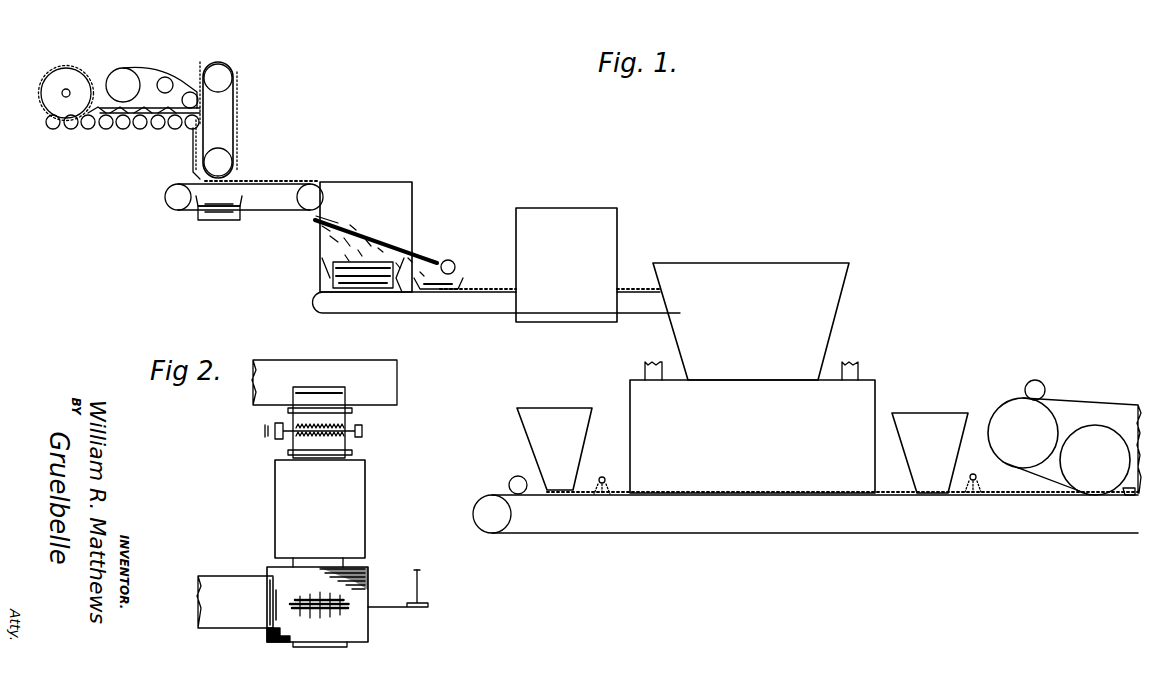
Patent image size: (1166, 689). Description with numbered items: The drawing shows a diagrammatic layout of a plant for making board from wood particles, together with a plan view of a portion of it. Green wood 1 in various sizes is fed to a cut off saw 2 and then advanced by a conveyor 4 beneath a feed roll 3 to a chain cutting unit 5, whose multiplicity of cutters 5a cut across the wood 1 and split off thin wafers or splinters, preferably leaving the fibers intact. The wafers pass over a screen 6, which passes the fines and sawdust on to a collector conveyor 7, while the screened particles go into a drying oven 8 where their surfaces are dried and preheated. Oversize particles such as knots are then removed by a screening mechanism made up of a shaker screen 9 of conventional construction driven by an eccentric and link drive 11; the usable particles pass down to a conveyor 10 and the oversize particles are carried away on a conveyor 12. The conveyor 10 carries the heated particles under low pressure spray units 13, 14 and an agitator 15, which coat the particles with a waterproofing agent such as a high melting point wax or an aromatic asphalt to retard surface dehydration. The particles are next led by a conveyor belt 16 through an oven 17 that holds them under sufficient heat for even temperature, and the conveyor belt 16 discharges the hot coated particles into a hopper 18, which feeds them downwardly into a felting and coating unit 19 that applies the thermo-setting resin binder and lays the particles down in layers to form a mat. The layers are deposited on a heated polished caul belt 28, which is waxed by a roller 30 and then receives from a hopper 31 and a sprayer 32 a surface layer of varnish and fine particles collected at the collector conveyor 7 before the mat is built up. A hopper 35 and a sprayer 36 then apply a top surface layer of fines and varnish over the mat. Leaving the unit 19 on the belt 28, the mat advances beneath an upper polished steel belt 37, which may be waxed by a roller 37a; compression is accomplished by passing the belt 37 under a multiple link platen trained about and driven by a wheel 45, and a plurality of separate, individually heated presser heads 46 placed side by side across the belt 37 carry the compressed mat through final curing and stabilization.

In FIG. 1, the green wood 1 is at (120, 128).
In FIG. 1, the cut off saw 2 is at (60, 68).
In FIG. 1, the feed roll 3 is at (115, 74).
In FIG. 1, the conveyor 4 is at (160, 118).
In FIG. 1, the chain cutting unit 5 is at (218, 68).
In FIG. 1, the cutters 5a is at (236, 96).
In FIG. 1, the screen 6 is at (280, 182).
In FIG. 2, the screen 6 is at (235, 602).
In FIG. 1, the collector conveyor 7 is at (221, 221).
In FIG. 1, the drying oven 8 is at (376, 182).
In FIG. 2, the drying oven 8 is at (320, 513).
In FIG. 1, the shaker screen 9 is at (315, 227).
In FIG. 2, the shaker screen 9 is at (360, 634).
In FIG. 1, the conveyor 10 is at (333, 286).
In FIG. 2, the conveyor 10 is at (345, 560).
In FIG. 1, the eccentric and link drive 11 is at (450, 259).
In FIG. 2, the eccentric and link drive 11 is at (418, 588).
In FIG. 1, the conveyor 12 is at (464, 276).
In FIG. 2, the low pressure spray unit 13 is at (352, 452).
In FIG. 2, the low pressure spray unit 14 is at (352, 411).
In FIG. 2, the agitator 15 is at (285, 436).
In FIG. 1, the conveyor belt 16 is at (478, 314).
In FIG. 2, the conveyor belt 16 is at (343, 372).
In FIG. 1, the oven 17 is at (566, 265).
In FIG. 1, the hopper 18 is at (742, 272).
In FIG. 1, the felting and coating unit 19 is at (752, 427).
In FIG. 1, the caul belt 28 is at (605, 534).
In FIG. 1, the roller 30 is at (516, 476).
In FIG. 1, the hopper 31 is at (554, 449).
In FIG. 1, the sprayer 32 is at (603, 476).
In FIG. 1, the hopper 35 is at (930, 453).
In FIG. 1, the sprayer 36 is at (974, 474).
In FIG. 1, the upper polished steel belt 37 is at (1100, 404).
In FIG. 1, the roller 37a is at (1036, 382).
In FIG. 1, the wheel 45 is at (1095, 460).
In FIG. 1, the presser heads 46 is at (1124, 500).